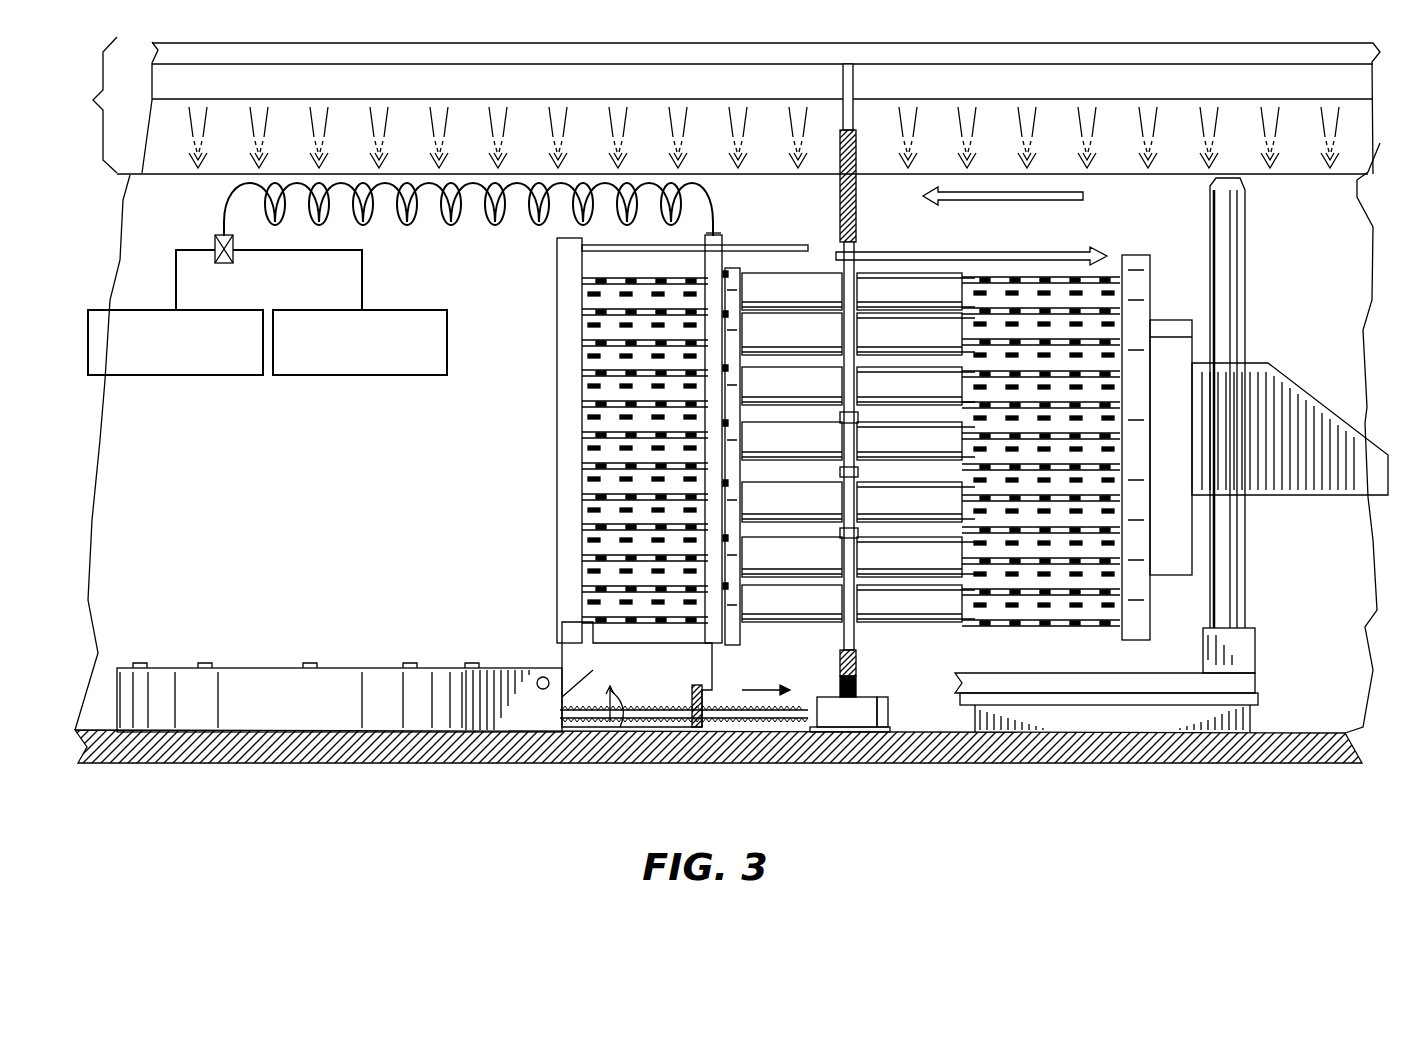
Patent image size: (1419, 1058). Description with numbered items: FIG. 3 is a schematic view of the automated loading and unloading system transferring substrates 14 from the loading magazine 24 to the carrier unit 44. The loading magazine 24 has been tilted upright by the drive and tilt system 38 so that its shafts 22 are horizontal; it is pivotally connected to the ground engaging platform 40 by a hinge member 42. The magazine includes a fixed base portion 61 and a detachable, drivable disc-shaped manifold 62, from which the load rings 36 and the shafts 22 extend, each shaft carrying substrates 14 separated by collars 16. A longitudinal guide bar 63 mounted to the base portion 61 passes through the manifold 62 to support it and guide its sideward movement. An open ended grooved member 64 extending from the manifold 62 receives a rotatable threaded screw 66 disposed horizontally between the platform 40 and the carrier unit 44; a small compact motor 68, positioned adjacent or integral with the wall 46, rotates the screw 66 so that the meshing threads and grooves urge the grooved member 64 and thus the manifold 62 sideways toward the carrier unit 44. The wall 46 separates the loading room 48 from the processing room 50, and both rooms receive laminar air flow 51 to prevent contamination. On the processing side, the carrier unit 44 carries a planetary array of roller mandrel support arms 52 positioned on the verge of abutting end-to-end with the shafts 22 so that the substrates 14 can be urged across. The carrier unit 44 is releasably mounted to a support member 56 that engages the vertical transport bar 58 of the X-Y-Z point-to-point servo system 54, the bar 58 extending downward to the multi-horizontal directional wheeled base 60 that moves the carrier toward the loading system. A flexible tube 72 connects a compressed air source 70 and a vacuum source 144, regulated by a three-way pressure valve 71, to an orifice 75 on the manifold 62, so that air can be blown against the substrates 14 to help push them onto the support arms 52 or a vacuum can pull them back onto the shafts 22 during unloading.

The laminar air flow 51 is at (92, 101).
The tube 72 is at (222, 210).
The three-way pressure valve 71 is at (215, 243).
The loading magazine 24 is at (516, 249).
The manifold 62 is at (716, 250).
The guide bar 63 is at (790, 245).
The orifice 75 is at (710, 234).
The substrates 14 is at (768, 284).
The collars 16 is at (850, 288).
The wall 46 is at (857, 217).
The roller mandrel support arms 52 is at (1012, 290).
The carrier unit 44 is at (1141, 265).
The vertical transport bar 58 is at (1232, 255).
The processing room 50 is at (1343, 225).
The support member 56 is at (1308, 410).
The base portion 61 is at (570, 318).
The shafts 22 is at (604, 338).
The drive and tilt system 38 is at (617, 659).
The hinge member 42 is at (560, 665).
The loading room 48 is at (132, 528).
The ground engaging platform 40 is at (165, 680).
The load ring 36 is at (737, 603).
The X-Y-Z point-to-point servo system 54 is at (1276, 583).
The wheeled base 60 is at (1243, 684).
The rotatable threaded screw 66 is at (675, 713).
The grooved member 64 is at (710, 727).
The motor 68 is at (855, 727).
The compressed air source 70 is at (218, 367).
The vacuum source 144 is at (358, 363).